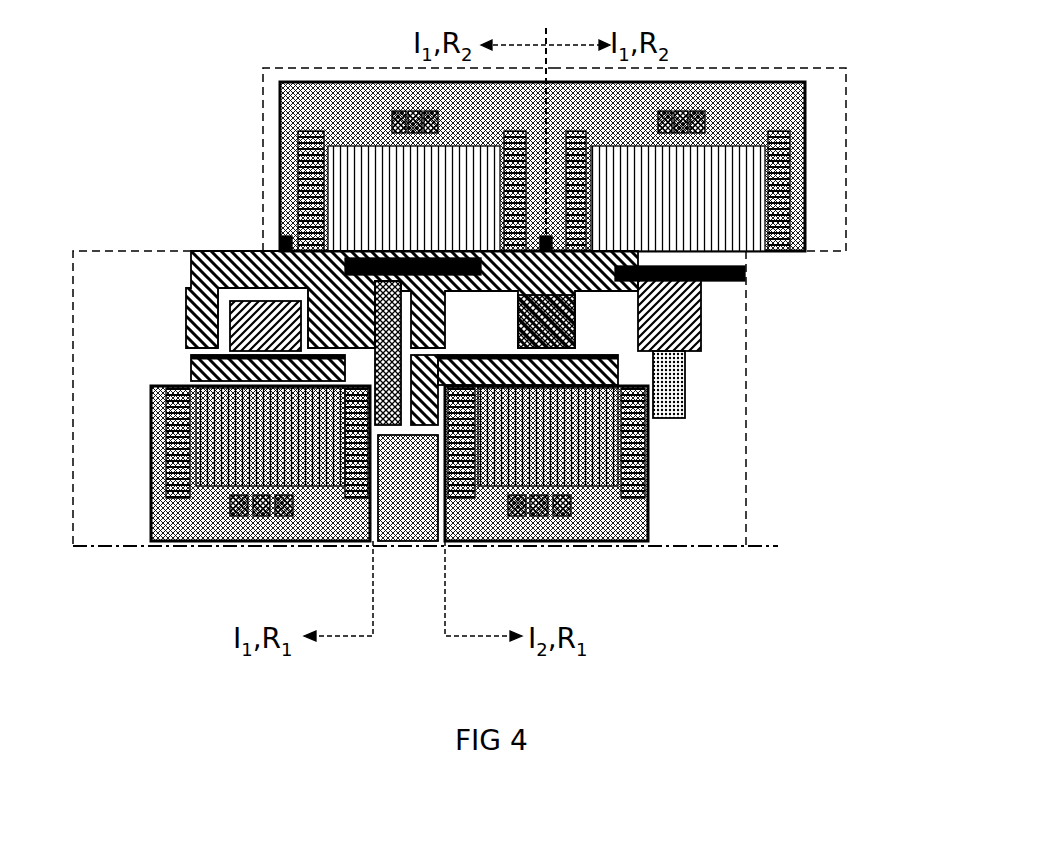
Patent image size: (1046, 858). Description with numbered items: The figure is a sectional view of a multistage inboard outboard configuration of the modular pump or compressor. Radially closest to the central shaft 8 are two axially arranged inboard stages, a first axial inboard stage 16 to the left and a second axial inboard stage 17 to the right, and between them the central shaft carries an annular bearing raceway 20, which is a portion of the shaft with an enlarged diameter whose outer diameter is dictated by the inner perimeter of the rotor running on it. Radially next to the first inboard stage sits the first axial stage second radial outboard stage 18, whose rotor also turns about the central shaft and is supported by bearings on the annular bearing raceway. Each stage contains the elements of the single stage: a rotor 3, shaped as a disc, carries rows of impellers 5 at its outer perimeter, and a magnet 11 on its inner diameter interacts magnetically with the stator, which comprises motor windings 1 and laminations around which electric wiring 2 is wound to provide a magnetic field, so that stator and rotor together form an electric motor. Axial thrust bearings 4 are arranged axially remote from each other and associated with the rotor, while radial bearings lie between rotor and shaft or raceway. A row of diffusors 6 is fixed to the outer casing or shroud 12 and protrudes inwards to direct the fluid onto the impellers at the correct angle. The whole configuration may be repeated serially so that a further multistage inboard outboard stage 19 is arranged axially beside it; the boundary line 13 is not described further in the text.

The motor windings 1 is at (730, 187).
The electric wiring 2 is at (640, 470).
The rotor 3 is at (700, 308).
The axial thrust bearings 4 is at (183, 350).
The impellers 5 is at (205, 278).
The diffusors 6 is at (185, 262).
The central shaft 8 is at (200, 495).
The magnet 11 is at (740, 270).
The outer casing or shroud 12 is at (760, 86).
The reference plane 13 is at (700, 540).
The first axial inboard stage 16 is at (60, 405).
The second axial inboard stage 17 is at (742, 455).
The first axial stage second radial outboard stage 18 is at (258, 128).
The second and/or third multistage inboard outboard stage 19 is at (840, 160).
The annular bearing raceway 20 is at (408, 540).